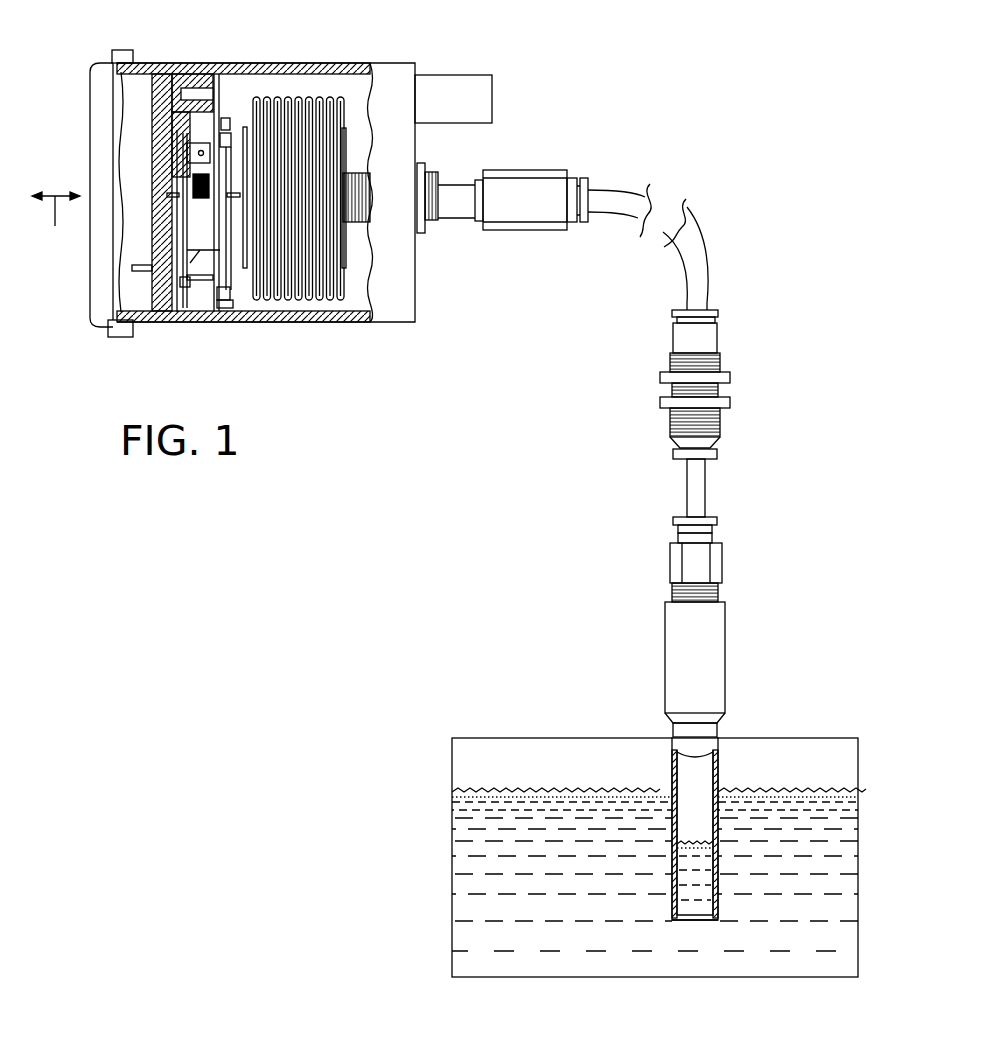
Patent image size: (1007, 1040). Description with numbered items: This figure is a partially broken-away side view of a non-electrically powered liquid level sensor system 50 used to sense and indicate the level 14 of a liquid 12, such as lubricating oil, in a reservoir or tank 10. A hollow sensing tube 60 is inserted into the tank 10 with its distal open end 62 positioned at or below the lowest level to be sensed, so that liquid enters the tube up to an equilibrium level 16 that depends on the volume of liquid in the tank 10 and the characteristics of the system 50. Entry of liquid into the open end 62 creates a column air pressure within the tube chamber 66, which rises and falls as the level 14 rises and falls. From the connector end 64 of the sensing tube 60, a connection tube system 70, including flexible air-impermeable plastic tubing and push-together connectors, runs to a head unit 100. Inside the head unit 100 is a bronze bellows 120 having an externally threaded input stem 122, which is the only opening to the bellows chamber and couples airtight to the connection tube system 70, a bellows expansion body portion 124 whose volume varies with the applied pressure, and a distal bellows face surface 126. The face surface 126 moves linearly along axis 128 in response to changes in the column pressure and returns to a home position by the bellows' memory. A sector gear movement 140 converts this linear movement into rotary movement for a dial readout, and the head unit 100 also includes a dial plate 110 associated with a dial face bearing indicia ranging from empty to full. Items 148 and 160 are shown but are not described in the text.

The reservoir or tank 10 is at (452, 889).
The liquid 12 is at (507, 848).
The level of the liquid 14 is at (480, 792).
The equilibrium level 16 is at (718, 775).
The liquid level sensor system 50 is at (656, 138).
The sensing tube 60 is at (707, 847).
The distal open end 62 is at (670, 920).
The connector end 64 is at (720, 590).
The tube chamber 66 is at (690, 797).
The connection tube system 70 is at (655, 588).
The head unit 100 is at (383, 322).
The dial plate 110 is at (145, 287).
The bellows 120 is at (303, 88).
The input stem 122 is at (437, 172).
The bellows expansion body portion 124 is at (317, 100).
The distal bellows face surface 126 is at (242, 118).
The axis 128 is at (56, 224).
The sector gear movement 140 is at (195, 130).
The connecting rod 148 is at (177, 312).
The coupling fitting 160 is at (547, 170).